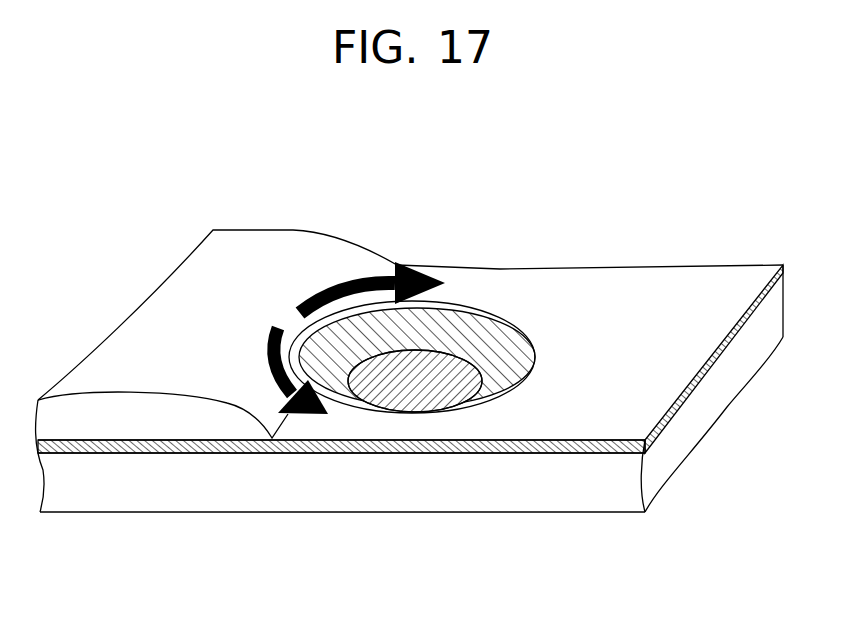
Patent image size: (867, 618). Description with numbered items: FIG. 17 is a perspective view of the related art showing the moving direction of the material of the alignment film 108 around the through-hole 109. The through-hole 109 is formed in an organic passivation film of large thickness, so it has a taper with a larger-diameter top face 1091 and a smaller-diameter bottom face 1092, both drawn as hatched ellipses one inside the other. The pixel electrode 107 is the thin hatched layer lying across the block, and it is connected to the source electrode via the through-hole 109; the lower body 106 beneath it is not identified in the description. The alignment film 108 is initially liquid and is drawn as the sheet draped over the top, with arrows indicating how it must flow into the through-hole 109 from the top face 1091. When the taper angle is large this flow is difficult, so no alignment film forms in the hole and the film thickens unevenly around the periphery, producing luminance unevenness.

The substrate 106 is at (537, 490).
The pixel electrode 107 is at (228, 441).
The alignment film 108 is at (303, 253).
The through-hole 109 is at (460, 283).
The top face 1091 is at (465, 307).
The bottom face 1092 is at (473, 363).